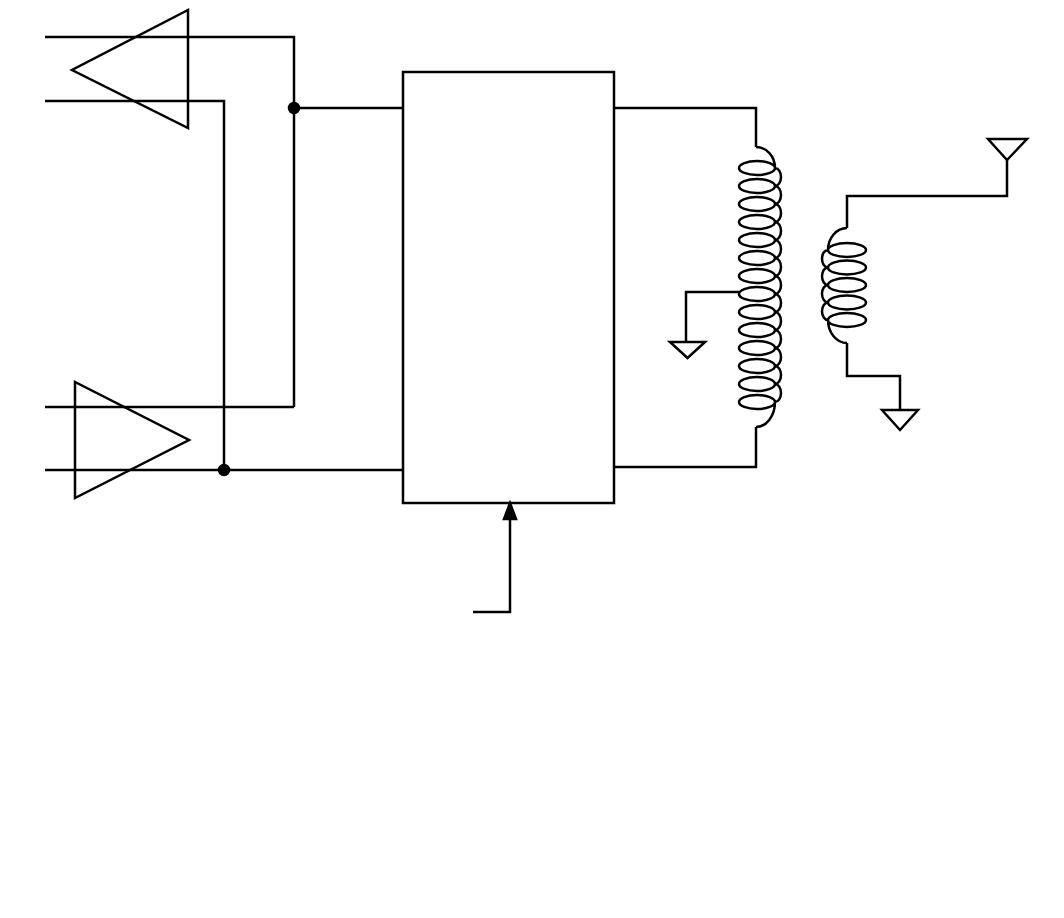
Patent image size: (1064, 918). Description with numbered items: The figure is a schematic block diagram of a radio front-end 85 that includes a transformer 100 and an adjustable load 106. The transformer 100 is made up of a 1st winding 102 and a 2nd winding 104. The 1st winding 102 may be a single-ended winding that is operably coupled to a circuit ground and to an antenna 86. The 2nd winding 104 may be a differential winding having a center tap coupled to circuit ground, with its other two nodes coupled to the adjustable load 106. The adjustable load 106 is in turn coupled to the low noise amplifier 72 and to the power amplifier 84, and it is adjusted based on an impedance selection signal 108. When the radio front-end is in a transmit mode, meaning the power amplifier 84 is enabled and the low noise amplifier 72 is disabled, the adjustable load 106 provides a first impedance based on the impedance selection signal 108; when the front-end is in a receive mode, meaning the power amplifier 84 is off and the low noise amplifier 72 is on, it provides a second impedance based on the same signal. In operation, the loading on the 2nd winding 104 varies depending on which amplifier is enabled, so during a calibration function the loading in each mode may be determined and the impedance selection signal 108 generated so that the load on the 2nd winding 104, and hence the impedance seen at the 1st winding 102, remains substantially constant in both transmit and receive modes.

The low noise amplifier 72 is at (169, 240).
The power amplifier 84 is at (224, 300).
The radio front-end 85 is at (536, 432).
The antenna 86 is at (1007, 133).
The transformer 100 is at (810, 278).
The 1st winding 102 is at (914, 280).
The 2nd winding 104 is at (697, 255).
The adjustable load 106 is at (454, 287).
The impedance selection signal 108 is at (431, 577).